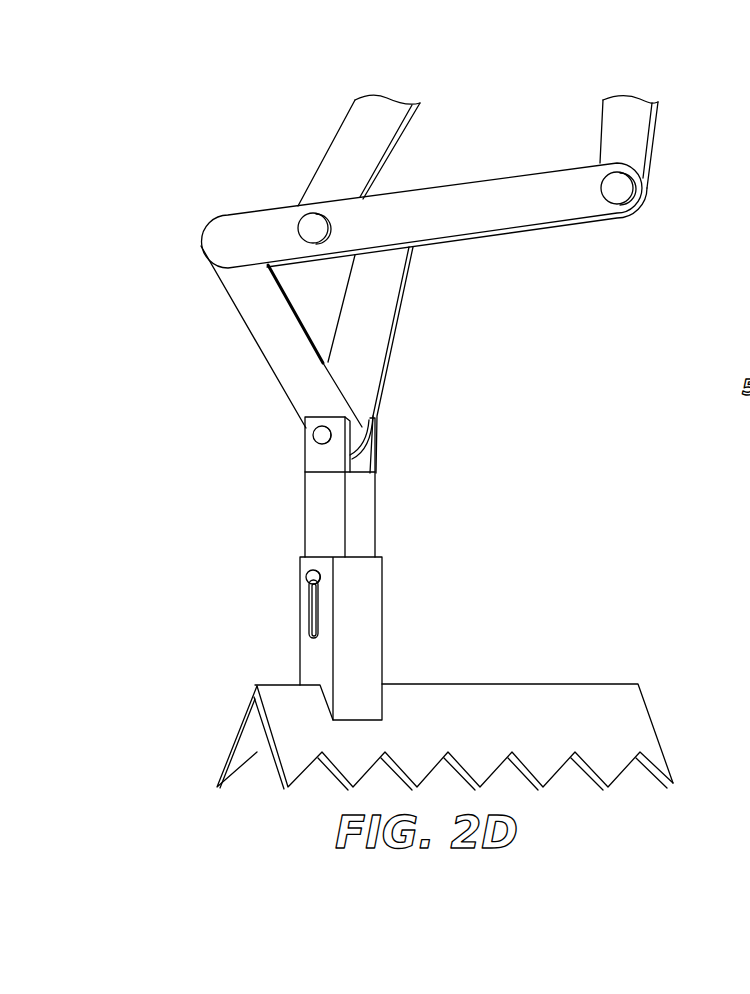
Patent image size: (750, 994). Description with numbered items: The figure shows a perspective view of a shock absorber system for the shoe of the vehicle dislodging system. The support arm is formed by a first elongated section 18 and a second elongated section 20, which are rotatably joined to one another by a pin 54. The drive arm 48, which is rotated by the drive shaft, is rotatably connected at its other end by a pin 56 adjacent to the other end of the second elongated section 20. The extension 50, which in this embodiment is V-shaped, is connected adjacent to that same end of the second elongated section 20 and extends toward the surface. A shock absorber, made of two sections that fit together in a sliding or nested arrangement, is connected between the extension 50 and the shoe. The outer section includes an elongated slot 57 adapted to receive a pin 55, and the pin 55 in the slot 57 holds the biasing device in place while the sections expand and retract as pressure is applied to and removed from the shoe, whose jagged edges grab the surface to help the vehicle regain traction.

The first elongated section 18 is at (615, 145).
The second elongated section 20 is at (488, 203).
The drive arm 48 is at (347, 147).
The extension 50 is at (382, 310).
The pin 54 is at (615, 188).
The pin 55 is at (308, 576).
The pin 56 is at (308, 226).
The elongated slot 57 is at (317, 612).